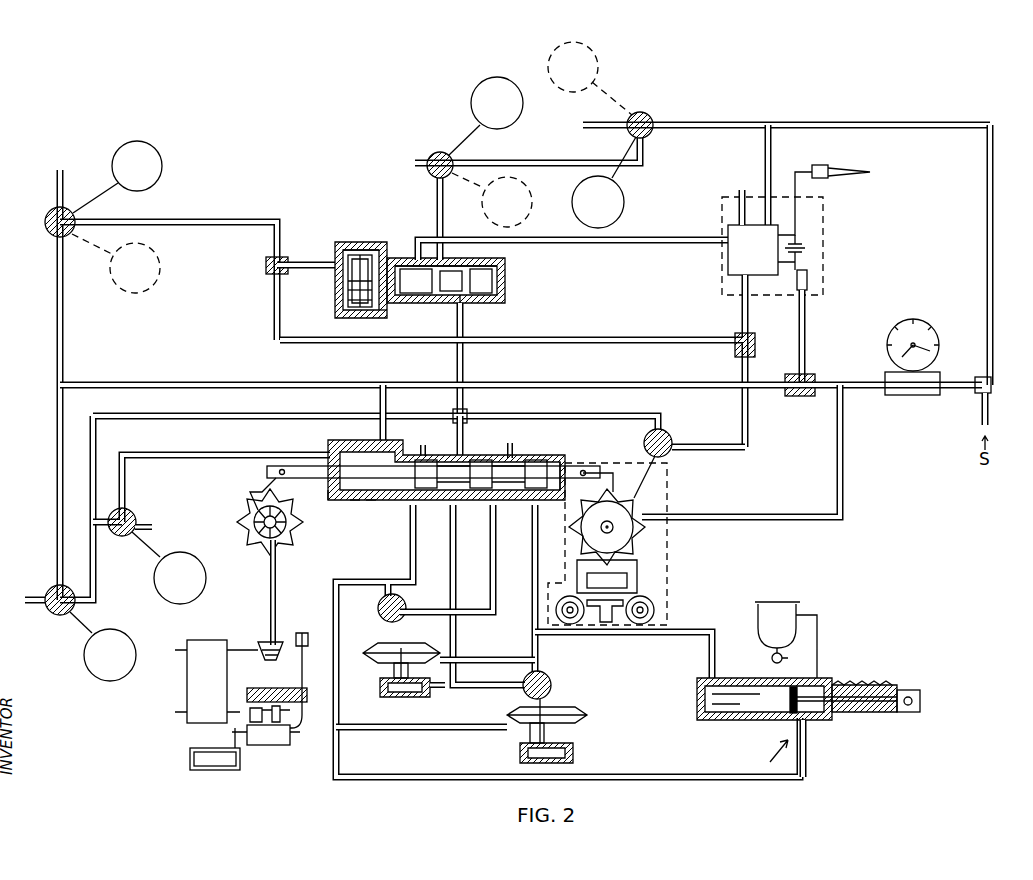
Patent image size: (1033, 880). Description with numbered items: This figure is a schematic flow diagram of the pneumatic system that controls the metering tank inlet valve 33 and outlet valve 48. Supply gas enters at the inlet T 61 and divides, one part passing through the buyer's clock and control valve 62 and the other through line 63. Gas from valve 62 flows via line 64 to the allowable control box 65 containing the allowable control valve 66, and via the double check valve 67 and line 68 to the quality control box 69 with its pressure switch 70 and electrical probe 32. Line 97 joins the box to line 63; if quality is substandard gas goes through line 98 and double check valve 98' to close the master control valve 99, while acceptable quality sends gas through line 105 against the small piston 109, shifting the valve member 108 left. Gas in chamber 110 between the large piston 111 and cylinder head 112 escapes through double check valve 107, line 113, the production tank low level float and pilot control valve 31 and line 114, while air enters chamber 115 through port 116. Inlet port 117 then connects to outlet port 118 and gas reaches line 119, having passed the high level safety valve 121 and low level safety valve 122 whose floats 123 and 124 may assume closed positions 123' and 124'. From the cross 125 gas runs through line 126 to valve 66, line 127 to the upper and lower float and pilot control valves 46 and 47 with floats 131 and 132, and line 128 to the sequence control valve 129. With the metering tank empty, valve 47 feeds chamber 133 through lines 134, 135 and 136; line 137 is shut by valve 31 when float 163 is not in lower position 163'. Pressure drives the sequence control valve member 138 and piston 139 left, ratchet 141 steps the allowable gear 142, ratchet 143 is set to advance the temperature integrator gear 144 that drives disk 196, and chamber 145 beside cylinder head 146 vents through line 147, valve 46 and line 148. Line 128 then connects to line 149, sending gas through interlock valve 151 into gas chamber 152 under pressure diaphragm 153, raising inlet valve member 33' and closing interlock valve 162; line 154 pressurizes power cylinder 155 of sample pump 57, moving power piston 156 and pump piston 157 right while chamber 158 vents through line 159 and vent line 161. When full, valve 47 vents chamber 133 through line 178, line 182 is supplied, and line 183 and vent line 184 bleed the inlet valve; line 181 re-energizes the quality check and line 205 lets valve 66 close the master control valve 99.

The production tank low level float and pilot control valve 31 is at (46, 216).
The sensor 32 is at (842, 170).
The metering tank inlet valve 33 is at (420, 693).
The inlet valve member 33' is at (421, 648).
The metering tank upper float and pilot control valve 46 is at (136, 516).
The metering tank lower float and pilot control valve 47 is at (48, 612).
The metering tank outlet valve 48 is at (575, 751).
The sample pump 57 is at (765, 751).
The inlet T 61 is at (994, 383).
The buyer's clock and control valve 62 is at (905, 394).
The line 63 is at (994, 183).
The line 64 is at (846, 481).
The allowable control box 65 is at (668, 549).
The allowable control valve 66 is at (672, 441).
The 2-way check valve 67 is at (812, 372).
The line 68 is at (808, 326).
The quality control box 69 is at (826, 241).
The pressure switch 70 is at (810, 275).
The line 97 is at (762, 162).
The line 98 is at (512, 361).
The 2-way check valve 98' is at (764, 331).
The master control valve 99 is at (372, 262).
The line 105 is at (700, 237).
The 2-way check valve 107 is at (266, 267).
The valve member 108 is at (385, 262).
The small piston 109 is at (438, 242).
The chamber 110 is at (342, 292).
The large piston 111 is at (342, 303).
The cylinder head 112 is at (336, 271).
The line 113 is at (188, 221).
The line 114 is at (52, 180).
The chamber 115 is at (360, 262).
The port 116 is at (380, 315).
The inlet port 117 is at (450, 268).
The outlet port 118 is at (462, 306).
The line 119 is at (465, 372).
The metering tank high level safety valve 121 is at (652, 112).
The metering tank low level safety valve 122 is at (430, 153).
The metering tank high level safety valve float 123 is at (629, 182).
The dotted position of float 123' is at (554, 77).
The float 124 is at (456, 116).
The lower position of float 124' is at (514, 200).
The cross 125 is at (467, 411).
The line 126 is at (580, 414).
The line 127 is at (165, 415).
The line 128 is at (466, 440).
The sequence control valve 129 is at (565, 459).
The float 131 is at (204, 596).
The float 132 is at (134, 644).
The chamber 133 is at (345, 448).
The line 134 is at (54, 428).
The line 135 is at (170, 380).
The line 136 is at (390, 405).
The line 137 is at (68, 318).
The sequence control valve member 138 is at (370, 503).
The piston 139 is at (355, 502).
The ratchet 141 is at (618, 475).
The allowable gear 142 is at (640, 553).
The ratchet 143 is at (246, 490).
The temperature integrator gear 144 is at (258, 547).
The chamber 145 is at (268, 470).
The cylinder head 146 is at (330, 503).
The line 147 is at (165, 455).
The line 148 is at (152, 530).
The line 149 is at (451, 600).
The interlock valve 151 is at (552, 685).
The gas chamber 152 is at (392, 667).
The pressure diaphragm 153 is at (390, 645).
The line 154 is at (640, 633).
The power cylinder 155 is at (735, 722).
The power piston 156 is at (790, 700).
The pump piston 157 is at (875, 688).
The chamber 158 is at (808, 722).
The line 159 is at (412, 557).
The vent line 161 is at (428, 442).
The interlock valve 162 is at (378, 608).
The float 163 is at (138, 167).
The lower position of float 163' is at (143, 263).
The line 178 is at (45, 599).
The line 181 is at (628, 383).
The line 182 is at (476, 618).
The line 183 is at (537, 621).
The vent line 184 is at (516, 446).
The disk 196 is at (268, 690).
The line 205 is at (755, 440).